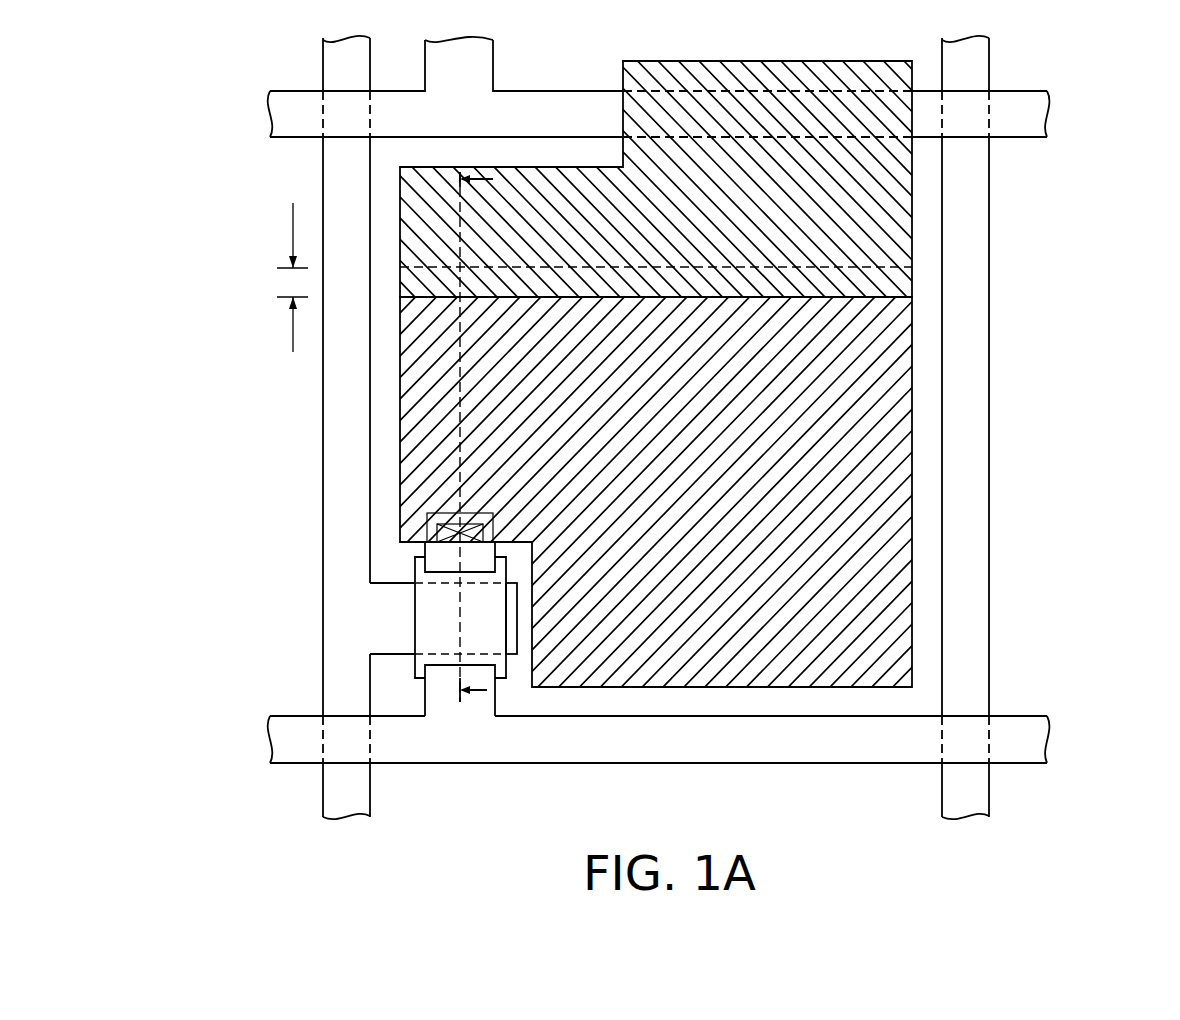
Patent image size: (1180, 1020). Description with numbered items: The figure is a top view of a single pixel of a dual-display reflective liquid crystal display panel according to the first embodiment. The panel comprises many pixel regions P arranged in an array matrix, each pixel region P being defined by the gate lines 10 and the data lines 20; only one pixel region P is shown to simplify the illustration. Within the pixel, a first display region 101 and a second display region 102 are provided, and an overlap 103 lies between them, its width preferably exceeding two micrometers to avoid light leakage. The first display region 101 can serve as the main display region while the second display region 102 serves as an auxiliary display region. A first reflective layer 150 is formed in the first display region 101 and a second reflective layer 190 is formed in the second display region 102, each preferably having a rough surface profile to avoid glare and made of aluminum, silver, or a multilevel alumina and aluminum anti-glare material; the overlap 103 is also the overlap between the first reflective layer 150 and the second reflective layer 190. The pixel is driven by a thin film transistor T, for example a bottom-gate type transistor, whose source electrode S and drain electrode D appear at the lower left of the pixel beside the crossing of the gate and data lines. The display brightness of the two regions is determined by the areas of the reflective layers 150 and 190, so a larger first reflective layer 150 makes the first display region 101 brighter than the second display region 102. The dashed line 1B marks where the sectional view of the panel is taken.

The gate line 10 is at (343, 795).
The data line 20 is at (1047, 113).
The first display region 101 is at (707, 453).
The second display region 102 is at (706, 242).
The overlap 103 is at (269, 277).
The first reflective layer 150 is at (893, 465).
The second reflective layer 190 is at (890, 222).
The thin film transistor T is at (400, 622).
The source electrode S is at (433, 552).
The drain electrode D is at (433, 693).
The pixel region P is at (1022, 323).
The section line 1B— 1B is at (483, 453).